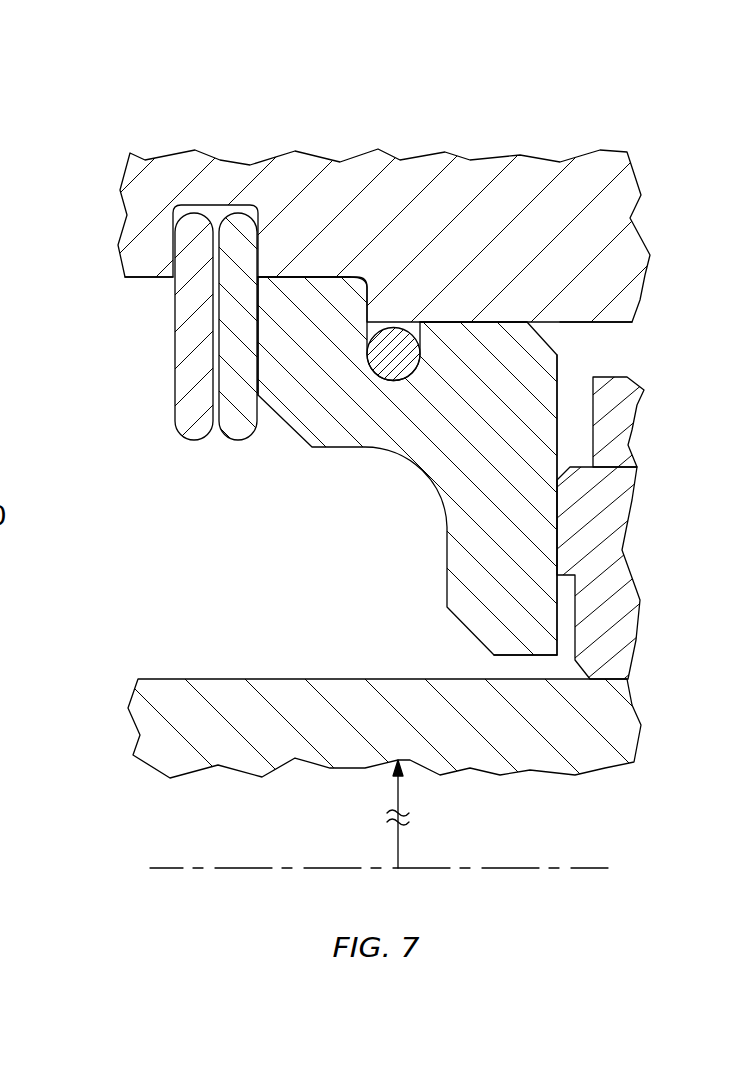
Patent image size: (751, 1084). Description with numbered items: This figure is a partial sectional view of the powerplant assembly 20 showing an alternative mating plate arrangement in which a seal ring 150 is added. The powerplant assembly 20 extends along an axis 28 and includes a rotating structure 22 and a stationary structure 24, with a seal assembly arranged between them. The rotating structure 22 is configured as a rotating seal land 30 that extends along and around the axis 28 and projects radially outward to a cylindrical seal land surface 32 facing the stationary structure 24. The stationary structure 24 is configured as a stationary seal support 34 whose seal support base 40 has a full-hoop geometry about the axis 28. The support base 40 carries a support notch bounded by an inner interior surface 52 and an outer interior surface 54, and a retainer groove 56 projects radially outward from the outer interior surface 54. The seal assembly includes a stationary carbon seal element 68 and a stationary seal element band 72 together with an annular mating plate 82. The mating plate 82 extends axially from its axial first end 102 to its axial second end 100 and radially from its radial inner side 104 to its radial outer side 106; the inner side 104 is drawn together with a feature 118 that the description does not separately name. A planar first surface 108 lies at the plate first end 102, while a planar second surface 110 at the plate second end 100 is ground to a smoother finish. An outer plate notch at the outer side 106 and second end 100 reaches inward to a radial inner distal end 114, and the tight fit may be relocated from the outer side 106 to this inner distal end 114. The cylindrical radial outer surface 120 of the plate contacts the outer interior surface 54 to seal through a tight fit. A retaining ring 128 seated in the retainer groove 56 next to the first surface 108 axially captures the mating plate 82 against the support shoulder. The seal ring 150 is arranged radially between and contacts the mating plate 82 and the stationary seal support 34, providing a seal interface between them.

The powerplant assembly 20 is at (628, 112).
The rotating structure 22 is at (379, 694).
The stationary structure 24 is at (375, 209).
The axis 28 is at (157, 870).
The rotating seal land 30 is at (130, 749).
The seal land surface 32 is at (153, 677).
The stationary seal support 34 is at (155, 137).
The seal support base 40 is at (443, 212).
The inner interior surface 52 is at (594, 323).
The outer interior surface 54 is at (148, 283).
The retainer groove 56 is at (224, 210).
The carbon seal element 68 is at (632, 553).
The seal element band 72 is at (632, 438).
The mating plate 82 is at (472, 429).
The axial second end 100 is at (647, 505).
The axial first end 102 is at (163, 336).
The radial inner side 104 is at (528, 694).
The radial outer side 106 is at (315, 233).
The first surface 108 is at (258, 357).
The second surface 110 is at (557, 527).
The radial inner distal end 114 is at (487, 321).
The lower contact surface 118 is at (520, 656).
The radial outer surface 120 is at (319, 276).
The retaining ring 128 is at (205, 455).
The seal ring 150 is at (394, 332).